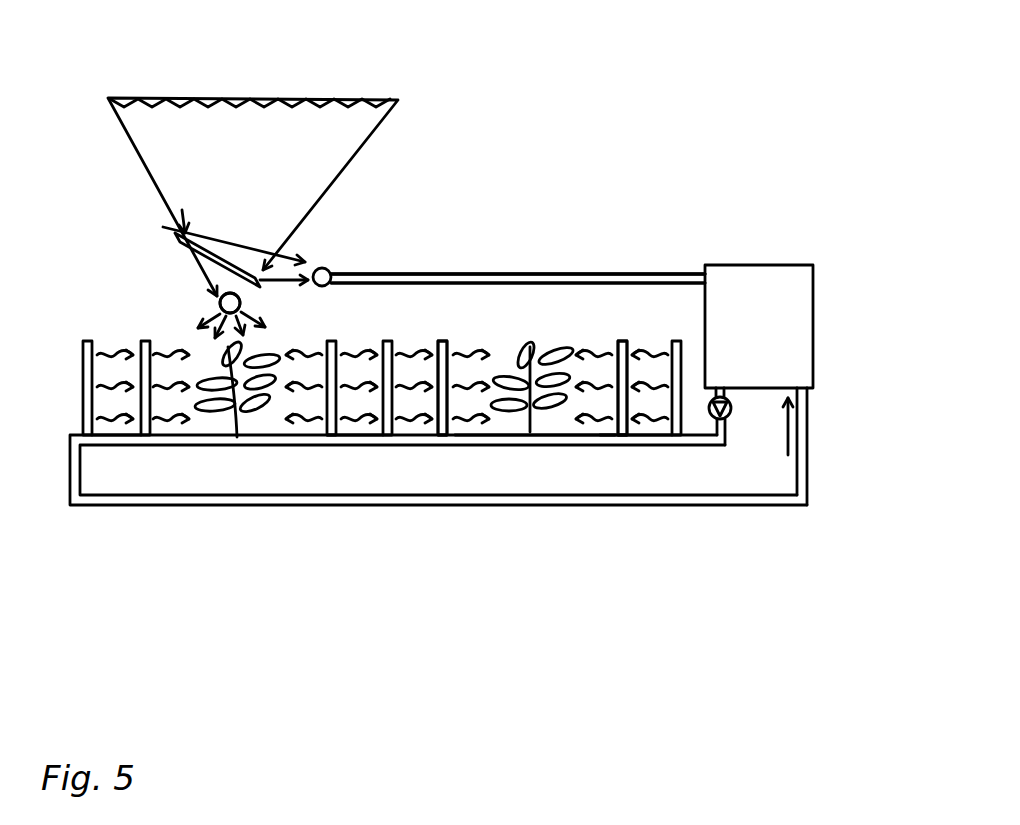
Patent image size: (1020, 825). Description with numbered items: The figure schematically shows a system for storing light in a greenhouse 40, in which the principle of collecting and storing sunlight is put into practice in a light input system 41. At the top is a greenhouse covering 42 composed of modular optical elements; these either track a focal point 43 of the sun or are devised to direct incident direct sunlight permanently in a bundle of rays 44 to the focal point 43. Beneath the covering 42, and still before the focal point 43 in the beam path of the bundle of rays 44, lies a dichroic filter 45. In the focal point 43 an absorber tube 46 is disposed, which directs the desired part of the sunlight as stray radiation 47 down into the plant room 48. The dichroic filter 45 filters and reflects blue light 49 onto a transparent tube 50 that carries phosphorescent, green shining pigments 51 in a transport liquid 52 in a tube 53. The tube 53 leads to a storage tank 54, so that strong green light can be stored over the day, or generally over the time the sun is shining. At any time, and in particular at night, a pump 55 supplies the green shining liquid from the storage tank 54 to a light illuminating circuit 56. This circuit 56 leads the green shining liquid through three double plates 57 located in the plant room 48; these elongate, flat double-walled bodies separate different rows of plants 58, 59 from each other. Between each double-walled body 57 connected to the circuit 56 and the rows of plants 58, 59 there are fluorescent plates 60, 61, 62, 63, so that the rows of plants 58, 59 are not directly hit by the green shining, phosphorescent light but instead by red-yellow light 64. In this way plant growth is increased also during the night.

The greenhouse 40 is at (625, 97).
The light input system 41 is at (262, 188).
The greenhouse covering 42 is at (258, 97).
The focal point 43 is at (216, 297).
The bundle of rays 44 is at (142, 156).
The dichroic filter 45 is at (222, 253).
The absorber tube 46 is at (218, 304).
The stray radiation 47 is at (260, 343).
The plant room 48 is at (210, 427).
The blue light 49 is at (330, 268).
The transparent tube 50 is at (397, 280).
The phosphorescent green shining pigments 51 is at (406, 283).
The transport liquid 52 is at (513, 278).
The tube 53 is at (563, 278).
The storage tank 54 is at (788, 292).
The pump 55 is at (733, 412).
The light illuminating circuit 56 is at (365, 505).
The double plates 57 is at (83, 417).
The row of plants 58 is at (183, 427).
The row of plants 59 is at (508, 427).
The fluorescent plate 60 is at (135, 433).
The fluorescent plate 61 is at (343, 437).
The fluorescent plate 62 is at (448, 405).
The fluorescent plate 63 is at (613, 433).
The red-yellow light 64 is at (613, 345).